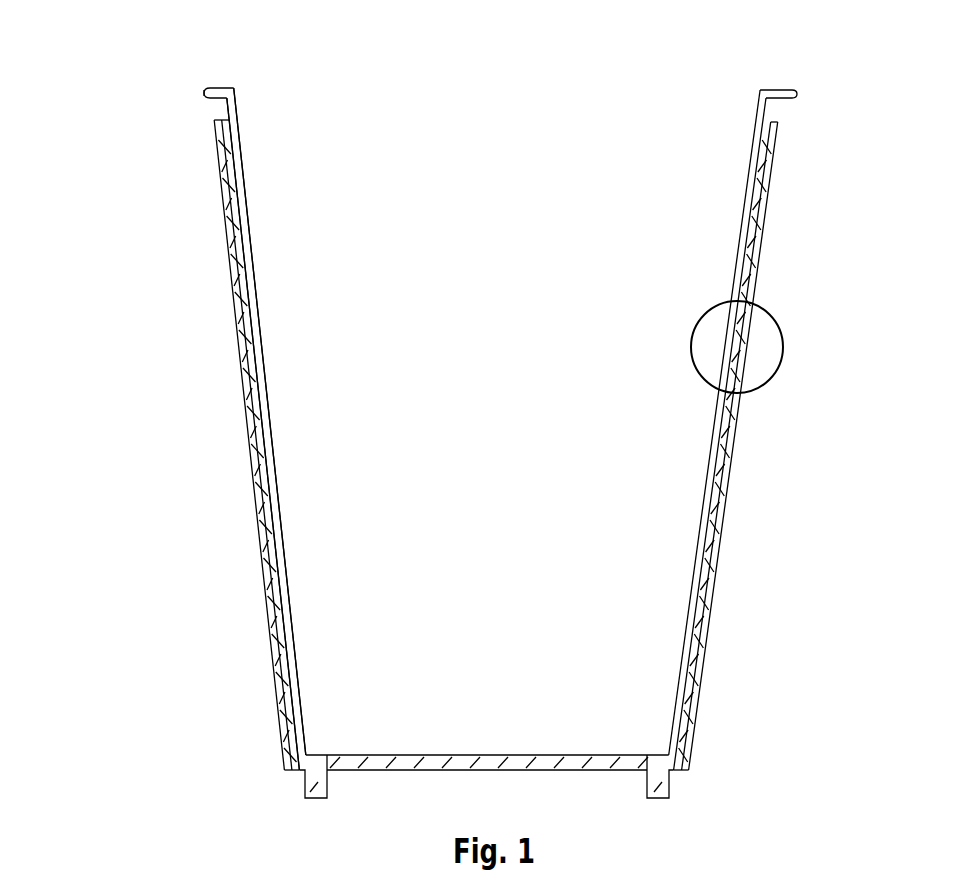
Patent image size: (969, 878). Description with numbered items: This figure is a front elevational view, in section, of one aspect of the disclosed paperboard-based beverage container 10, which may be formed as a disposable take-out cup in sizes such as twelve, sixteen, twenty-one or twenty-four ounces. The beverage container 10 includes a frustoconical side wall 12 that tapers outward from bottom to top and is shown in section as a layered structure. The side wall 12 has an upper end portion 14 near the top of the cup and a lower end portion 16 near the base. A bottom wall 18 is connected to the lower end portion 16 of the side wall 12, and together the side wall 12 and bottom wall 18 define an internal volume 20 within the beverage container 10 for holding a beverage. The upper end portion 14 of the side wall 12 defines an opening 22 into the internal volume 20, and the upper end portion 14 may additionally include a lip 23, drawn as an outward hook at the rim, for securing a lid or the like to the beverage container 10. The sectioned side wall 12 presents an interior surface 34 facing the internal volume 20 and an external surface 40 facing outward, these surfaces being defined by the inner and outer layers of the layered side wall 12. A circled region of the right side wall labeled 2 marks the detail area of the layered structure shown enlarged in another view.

The paperboard-based beverage container 10 is at (95, 138).
The frustoconical side wall 12 is at (742, 428).
The upper end portion 14 is at (214, 124).
The lower end portion 16 is at (284, 764).
The bottom wall 18 is at (566, 772).
The internal volume 20 is at (507, 187).
The opening 22 is at (250, 82).
The lip 23 is at (206, 92).
The detail area 2 is at (784, 329).
The interior surface 34 is at (700, 474).
The external surface 40 is at (730, 528).